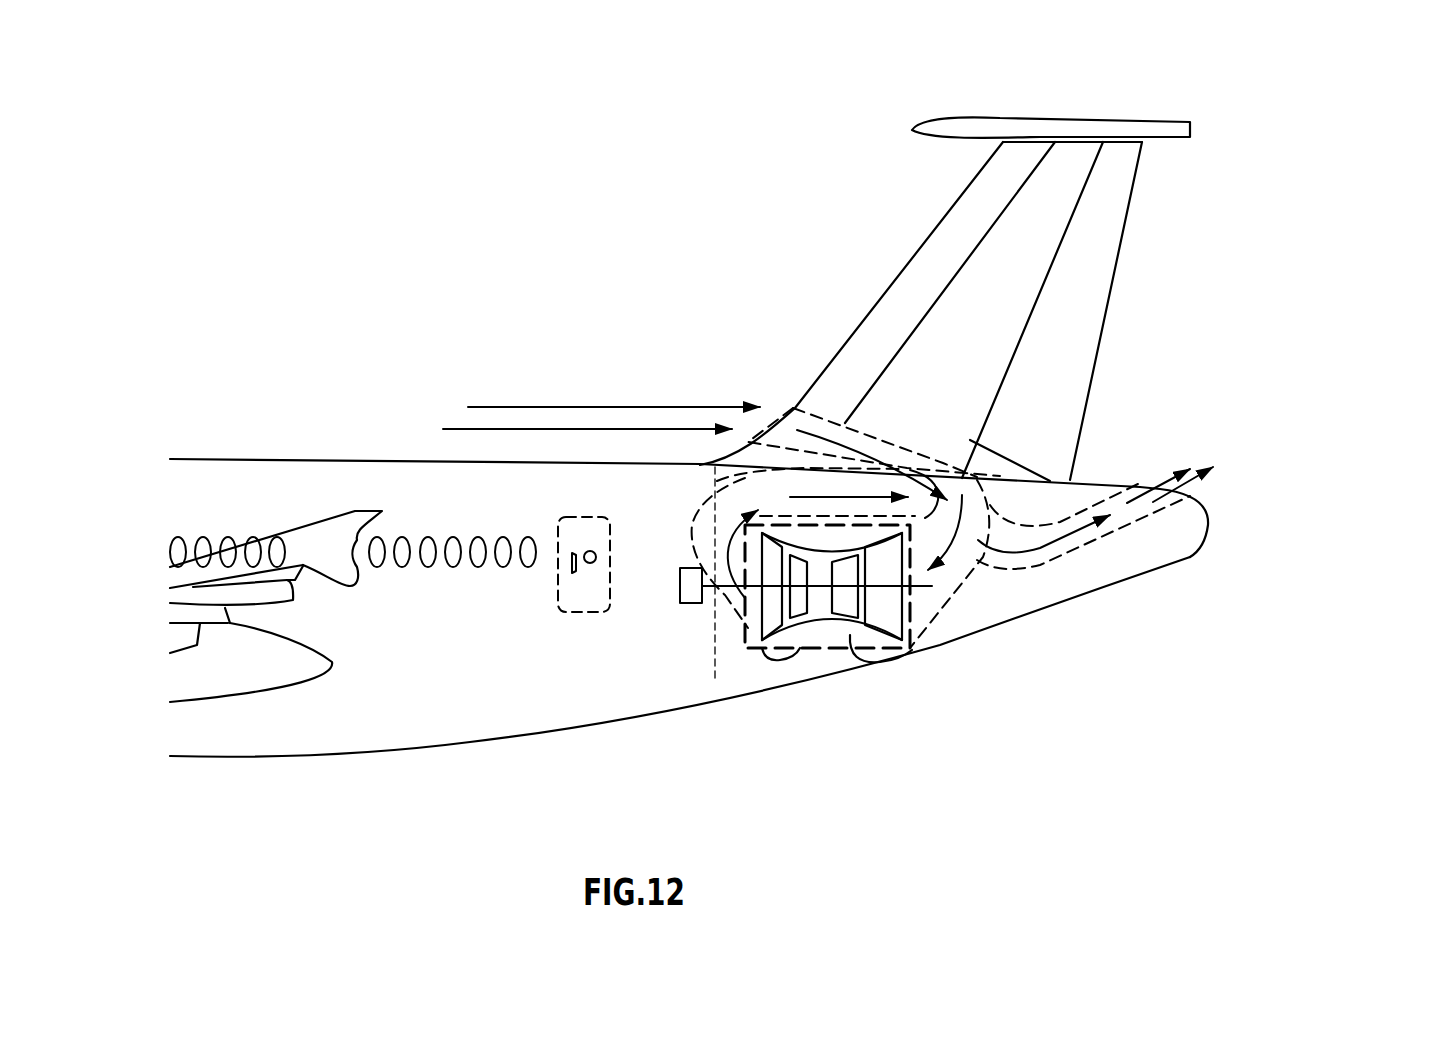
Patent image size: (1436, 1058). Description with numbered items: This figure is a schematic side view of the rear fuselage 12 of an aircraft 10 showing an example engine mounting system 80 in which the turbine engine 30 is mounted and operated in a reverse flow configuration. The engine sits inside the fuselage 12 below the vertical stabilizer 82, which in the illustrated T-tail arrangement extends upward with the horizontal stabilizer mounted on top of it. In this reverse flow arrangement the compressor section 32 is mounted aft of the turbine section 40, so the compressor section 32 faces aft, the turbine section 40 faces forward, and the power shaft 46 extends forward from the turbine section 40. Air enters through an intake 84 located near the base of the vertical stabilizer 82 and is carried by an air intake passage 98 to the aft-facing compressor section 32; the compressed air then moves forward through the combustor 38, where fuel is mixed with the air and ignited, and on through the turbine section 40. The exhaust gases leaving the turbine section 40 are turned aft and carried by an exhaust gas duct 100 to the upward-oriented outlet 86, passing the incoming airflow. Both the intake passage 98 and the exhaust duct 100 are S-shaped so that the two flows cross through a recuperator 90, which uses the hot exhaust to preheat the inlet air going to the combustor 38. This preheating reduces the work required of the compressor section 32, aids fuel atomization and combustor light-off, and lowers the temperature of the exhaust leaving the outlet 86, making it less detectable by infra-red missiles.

The aircraft 10 is at (604, 311).
The fuselage 12 is at (433, 719).
The turbine engine 30 is at (746, 652).
The compressor section 32 is at (880, 632).
The combustor 38 is at (822, 632).
The turbine section 40 is at (772, 655).
The shaft 46 is at (745, 605).
The engine mounting system 80 is at (1312, 148).
The vertical stabilizer 82 is at (980, 268).
The intake 84 is at (779, 408).
The outlet 86 is at (1137, 480).
The recuperator 90 is at (973, 535).
The air intake passage 98 is at (957, 498).
The exhaust gas duct 100 is at (1020, 557).